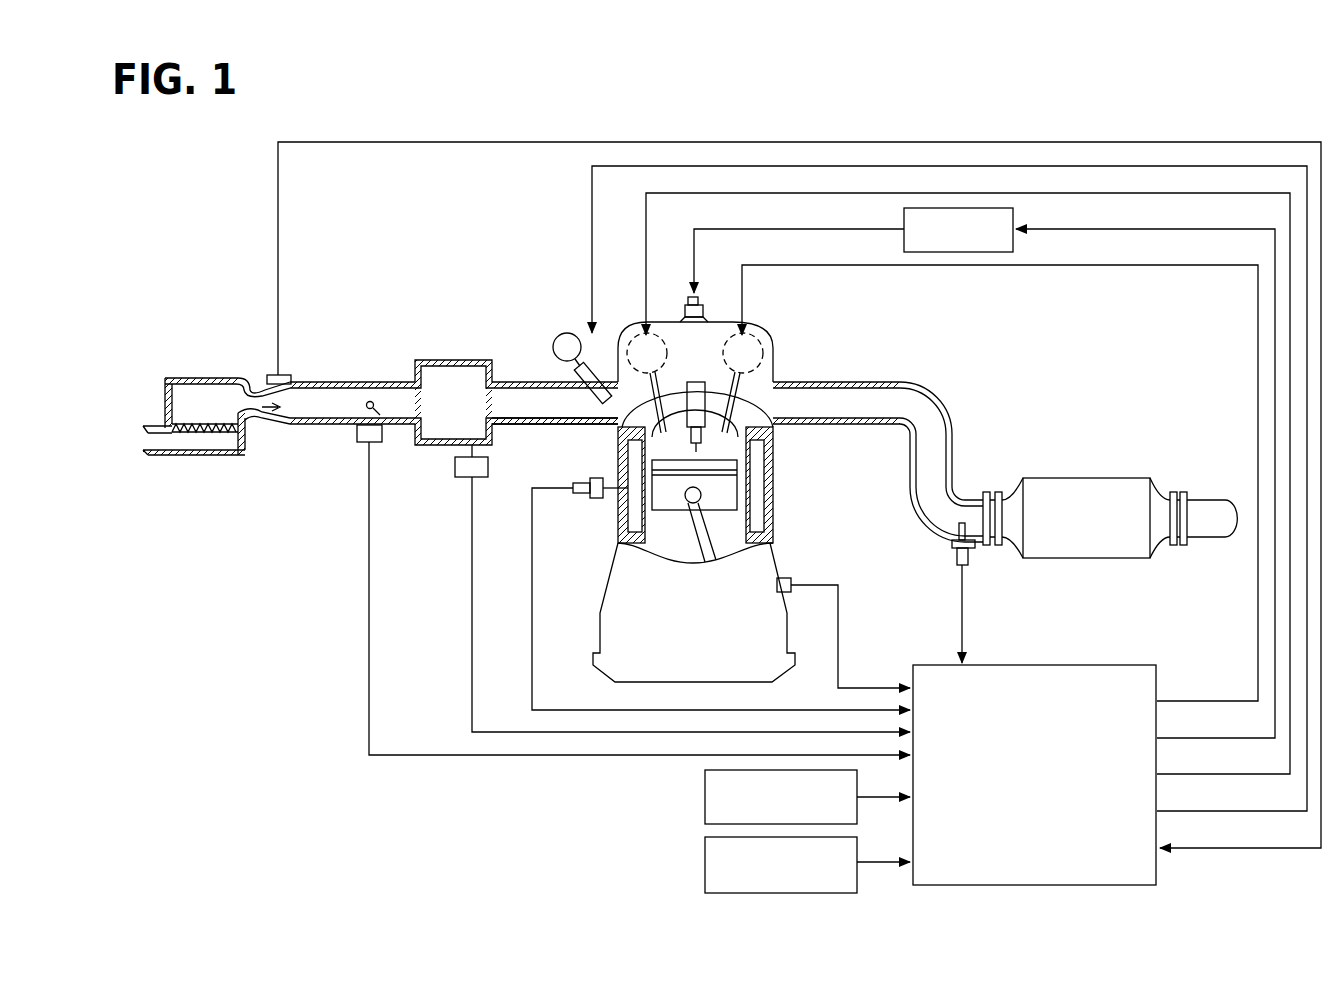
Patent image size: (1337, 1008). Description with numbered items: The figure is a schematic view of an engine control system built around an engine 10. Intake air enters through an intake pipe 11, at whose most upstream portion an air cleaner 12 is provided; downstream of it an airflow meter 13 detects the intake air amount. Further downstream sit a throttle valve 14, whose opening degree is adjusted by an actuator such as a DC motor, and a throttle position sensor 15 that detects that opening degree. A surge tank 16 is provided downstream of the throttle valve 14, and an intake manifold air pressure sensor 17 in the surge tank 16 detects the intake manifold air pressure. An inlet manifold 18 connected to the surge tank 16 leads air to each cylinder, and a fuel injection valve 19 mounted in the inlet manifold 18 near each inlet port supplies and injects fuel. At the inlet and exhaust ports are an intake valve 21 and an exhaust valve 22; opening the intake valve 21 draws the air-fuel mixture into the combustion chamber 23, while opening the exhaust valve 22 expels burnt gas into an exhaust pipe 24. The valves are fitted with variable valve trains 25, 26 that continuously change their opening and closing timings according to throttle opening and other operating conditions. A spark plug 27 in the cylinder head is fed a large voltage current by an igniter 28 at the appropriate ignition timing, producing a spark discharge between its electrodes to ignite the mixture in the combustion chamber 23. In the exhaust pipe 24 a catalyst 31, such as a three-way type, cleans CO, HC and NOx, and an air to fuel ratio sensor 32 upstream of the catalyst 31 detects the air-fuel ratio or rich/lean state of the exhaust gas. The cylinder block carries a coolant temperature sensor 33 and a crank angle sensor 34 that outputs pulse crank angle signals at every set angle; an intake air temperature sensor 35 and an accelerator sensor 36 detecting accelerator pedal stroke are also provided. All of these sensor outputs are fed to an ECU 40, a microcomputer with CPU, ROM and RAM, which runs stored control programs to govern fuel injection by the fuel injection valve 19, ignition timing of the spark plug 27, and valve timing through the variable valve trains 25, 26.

The engine 10 is at (826, 328).
The intake pipe 11 is at (360, 382).
The air cleaner 12 is at (217, 433).
The airflow meter 13 is at (285, 379).
The throttle valve 14 is at (364, 404).
The throttle position sensor 15 is at (357, 443).
The surge tank 16 is at (452, 360).
The intake manifold air pressure sensor 17 is at (455, 465).
The inlet manifold 18 is at (524, 425).
The fuel injection valve 19 is at (570, 374).
The intake valve 21 is at (622, 438).
The exhaust valve 22 is at (775, 425).
The combustion chamber 23 is at (740, 488).
The exhaust pipe 24 is at (886, 382).
The variable valve train 25 is at (638, 337).
The variable valve train 26 is at (757, 337).
The spark plug 27 is at (701, 383).
The igniter 28 is at (1015, 239).
The catalyst 31 is at (1120, 478).
The air to fuel ratio sensor 32 is at (972, 562).
The coolant temperature sensor 33 is at (596, 498).
The crank angle sensor 34 is at (790, 580).
The intake air temperature sensor 35 is at (705, 797).
The accelerator sensor 36 is at (705, 862).
The ECU 40 is at (1125, 665).